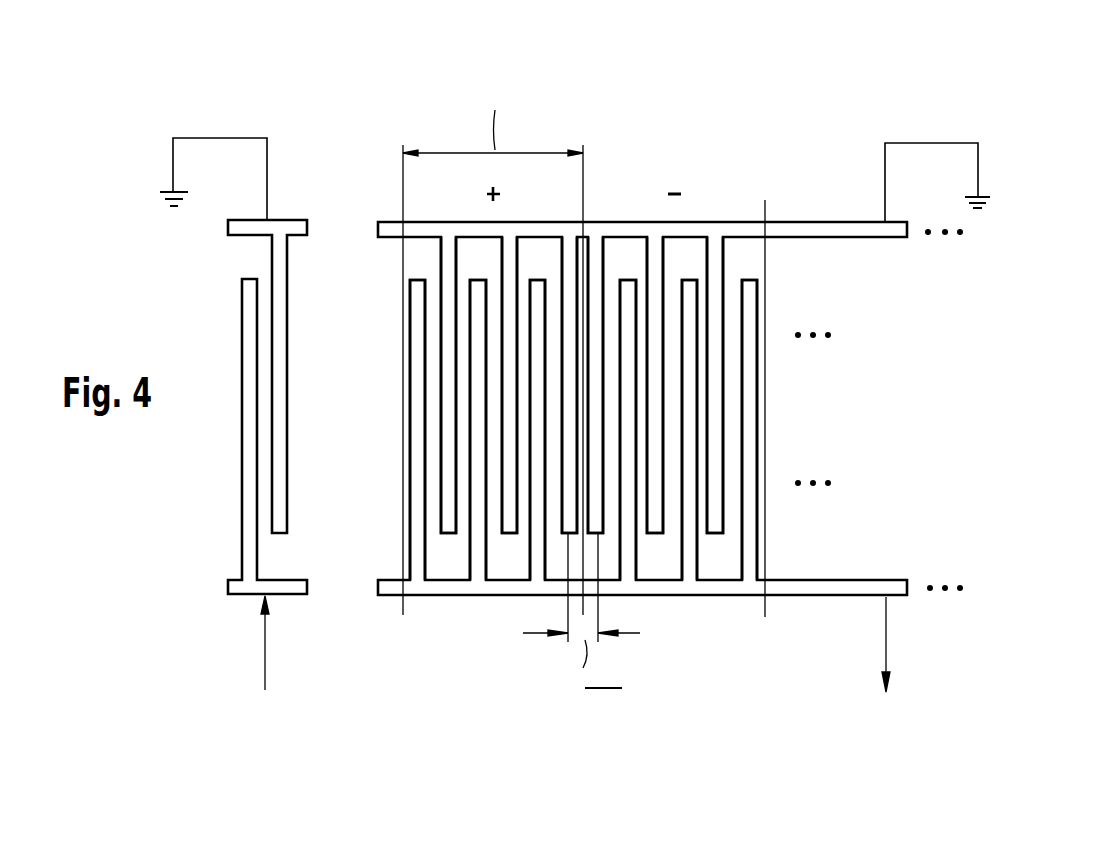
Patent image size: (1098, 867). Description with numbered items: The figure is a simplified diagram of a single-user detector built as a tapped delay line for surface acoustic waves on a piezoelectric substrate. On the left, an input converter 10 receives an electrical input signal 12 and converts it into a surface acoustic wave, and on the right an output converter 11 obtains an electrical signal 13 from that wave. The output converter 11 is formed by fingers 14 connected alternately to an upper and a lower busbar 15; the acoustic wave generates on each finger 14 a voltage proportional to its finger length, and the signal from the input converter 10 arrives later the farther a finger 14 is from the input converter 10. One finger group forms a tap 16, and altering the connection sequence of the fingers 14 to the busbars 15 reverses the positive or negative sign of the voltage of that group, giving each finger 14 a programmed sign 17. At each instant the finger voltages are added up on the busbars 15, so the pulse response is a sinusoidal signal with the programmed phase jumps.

The input converter 10 is at (298, 112).
The output converter 11 is at (648, 366).
The electrical input signal 12 is at (266, 645).
The electrical signal 13 is at (888, 634).
The finger 14 is at (417, 318).
The busbar 15 is at (830, 232).
The tap 16 is at (690, 183).
The programmed sign 17 is at (476, 190).